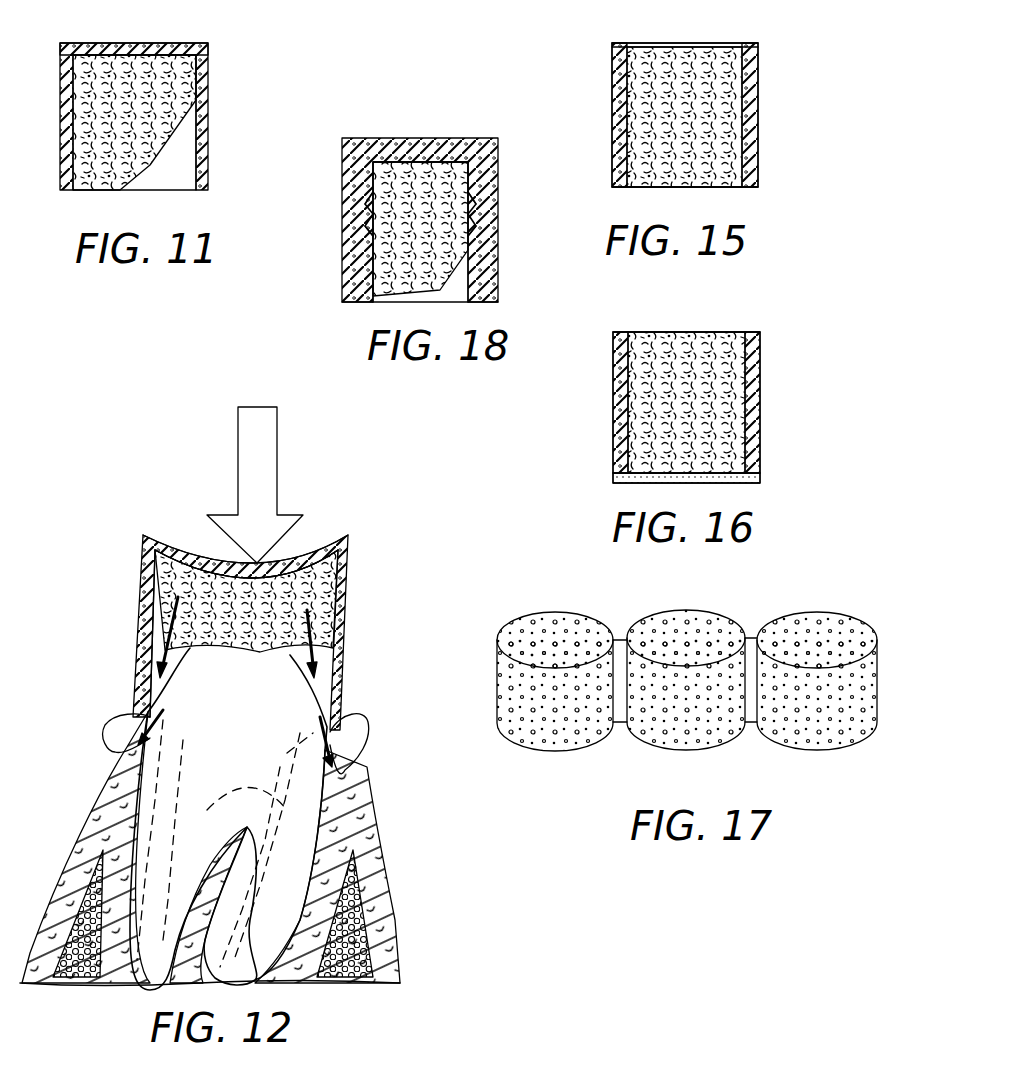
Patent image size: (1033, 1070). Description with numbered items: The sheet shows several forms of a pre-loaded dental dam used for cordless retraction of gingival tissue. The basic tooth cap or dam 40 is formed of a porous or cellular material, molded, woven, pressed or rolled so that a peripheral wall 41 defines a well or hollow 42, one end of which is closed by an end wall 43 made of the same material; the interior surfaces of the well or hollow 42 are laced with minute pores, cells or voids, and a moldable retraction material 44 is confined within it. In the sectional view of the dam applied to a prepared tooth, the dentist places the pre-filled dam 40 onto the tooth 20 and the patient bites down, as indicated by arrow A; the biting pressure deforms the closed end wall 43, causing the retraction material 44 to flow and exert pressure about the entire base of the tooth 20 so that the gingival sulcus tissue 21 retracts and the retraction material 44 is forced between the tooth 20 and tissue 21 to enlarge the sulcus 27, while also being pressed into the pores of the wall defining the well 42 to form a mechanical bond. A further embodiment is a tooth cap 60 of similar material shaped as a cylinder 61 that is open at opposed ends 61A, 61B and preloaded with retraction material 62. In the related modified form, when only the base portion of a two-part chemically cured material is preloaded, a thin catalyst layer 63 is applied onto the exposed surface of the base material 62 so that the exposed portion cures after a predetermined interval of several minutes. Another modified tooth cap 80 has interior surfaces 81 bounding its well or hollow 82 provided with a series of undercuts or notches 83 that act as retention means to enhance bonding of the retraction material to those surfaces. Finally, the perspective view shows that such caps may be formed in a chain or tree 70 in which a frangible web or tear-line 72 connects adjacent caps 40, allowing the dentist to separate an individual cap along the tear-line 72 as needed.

In FIG. 12, the tooth 20 is at (275, 710).
In FIG. 12, the gingival sulcus tissue 21 is at (367, 790).
In FIG. 12, the sulcus 27 is at (127, 720).
In FIG. 17, the tooth cap or dam 40 is at (847, 751).
In FIG. 12, the tooth cap or dam 40 is at (247, 628).
In FIG. 11, the peripheral wall 41 is at (208, 103).
In FIG. 12, the peripheral wall 41 is at (348, 660).
In FIG. 11, the well or hollow 42 is at (196, 127).
In FIG. 12, the well or hollow 42 is at (155, 595).
In FIG. 11, the end wall 43 is at (152, 47).
In FIG. 12, the end wall 43 is at (300, 555).
In FIG. 11, the retraction material 44 is at (150, 112).
In FIG. 12, the retraction material 44 is at (275, 612).
In FIG. 15, the tooth cap 60 is at (600, 122).
In FIG. 16, the tooth cap 60 is at (770, 378).
In FIG. 15, the cylinder 61 is at (758, 108).
In FIG. 16, the cylinder 61 is at (760, 412).
In FIG. 15, the open end 61A is at (718, 43).
In FIG. 16, the open end 61A is at (748, 333).
In FIG. 15, the open end 61B is at (742, 187).
In FIG. 16, the open end 61B is at (628, 455).
In FIG. 15, the retraction material 62 is at (715, 148).
In FIG. 16, the retraction material 62 is at (712, 440).
In FIG. 16, the catalyst layer 63 is at (745, 486).
In FIG. 17, the chain or tree 70 is at (662, 683).
In FIG. 17, the frangible web or tear-line 72 is at (750, 720).
In FIG. 18, the tooth cap 80 is at (465, 127).
In FIG. 18, the interior surfaces 81 is at (400, 169).
In FIG. 18, the well or hollow 82 is at (440, 283).
In FIG. 18, the undercuts or notches 83 is at (470, 213).
In FIG. 12, the arrow A is at (268, 473).